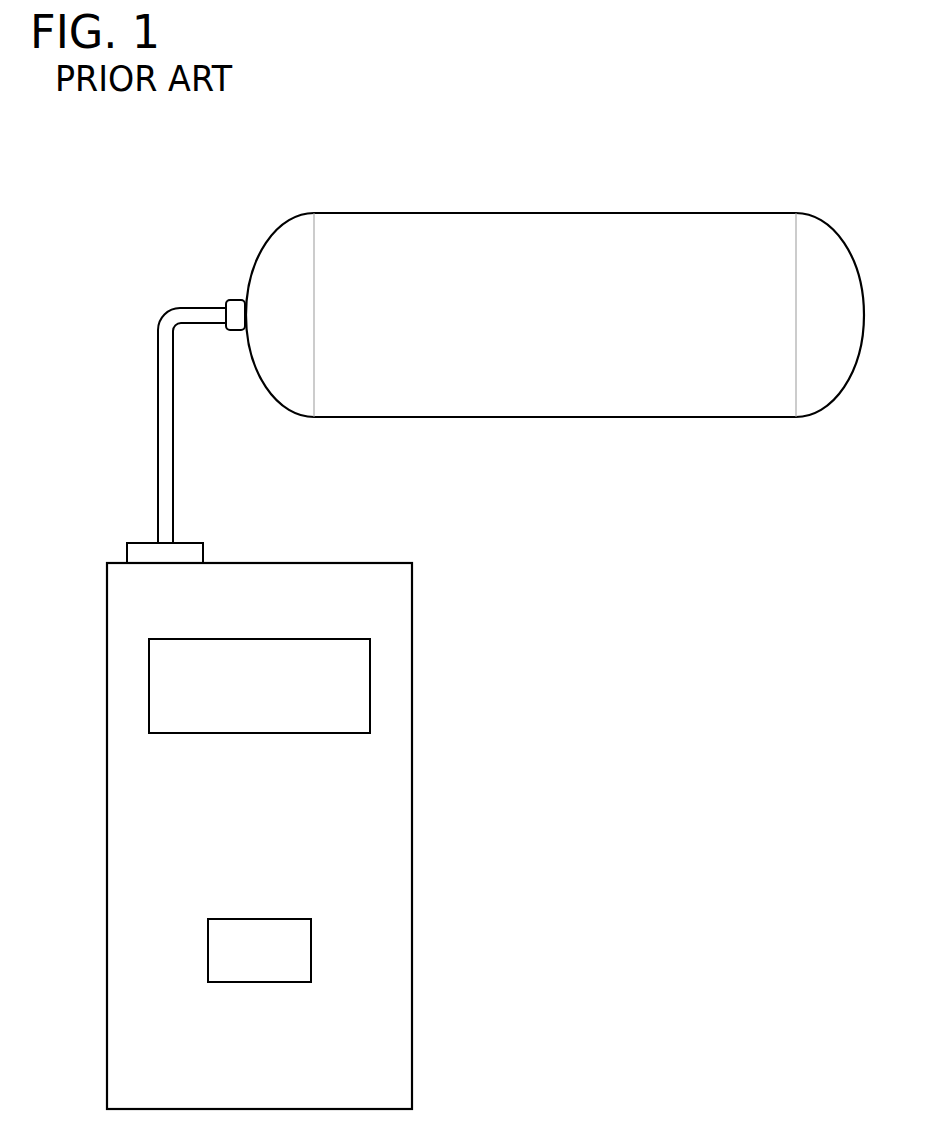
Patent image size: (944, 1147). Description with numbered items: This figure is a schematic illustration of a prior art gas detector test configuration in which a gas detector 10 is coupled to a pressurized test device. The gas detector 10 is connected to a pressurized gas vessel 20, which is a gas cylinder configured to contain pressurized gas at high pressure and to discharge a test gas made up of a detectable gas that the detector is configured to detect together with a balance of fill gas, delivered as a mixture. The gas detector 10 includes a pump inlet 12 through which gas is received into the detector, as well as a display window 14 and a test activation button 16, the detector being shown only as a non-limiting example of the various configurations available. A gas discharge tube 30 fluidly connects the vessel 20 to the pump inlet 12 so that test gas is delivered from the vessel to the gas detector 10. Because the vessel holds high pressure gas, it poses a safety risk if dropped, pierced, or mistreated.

The gas detector 10 is at (387, 845).
The pump inlet 12 is at (142, 543).
The display window 14 is at (358, 666).
The test activation button 16 is at (312, 950).
The pressurized gas vessel 20 is at (555, 237).
The gas discharge tube 30 is at (165, 346).